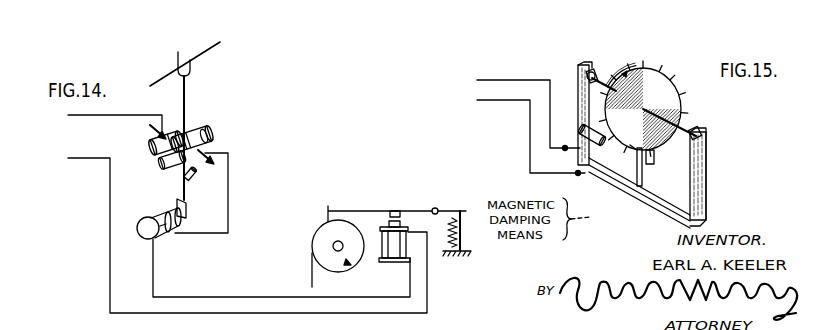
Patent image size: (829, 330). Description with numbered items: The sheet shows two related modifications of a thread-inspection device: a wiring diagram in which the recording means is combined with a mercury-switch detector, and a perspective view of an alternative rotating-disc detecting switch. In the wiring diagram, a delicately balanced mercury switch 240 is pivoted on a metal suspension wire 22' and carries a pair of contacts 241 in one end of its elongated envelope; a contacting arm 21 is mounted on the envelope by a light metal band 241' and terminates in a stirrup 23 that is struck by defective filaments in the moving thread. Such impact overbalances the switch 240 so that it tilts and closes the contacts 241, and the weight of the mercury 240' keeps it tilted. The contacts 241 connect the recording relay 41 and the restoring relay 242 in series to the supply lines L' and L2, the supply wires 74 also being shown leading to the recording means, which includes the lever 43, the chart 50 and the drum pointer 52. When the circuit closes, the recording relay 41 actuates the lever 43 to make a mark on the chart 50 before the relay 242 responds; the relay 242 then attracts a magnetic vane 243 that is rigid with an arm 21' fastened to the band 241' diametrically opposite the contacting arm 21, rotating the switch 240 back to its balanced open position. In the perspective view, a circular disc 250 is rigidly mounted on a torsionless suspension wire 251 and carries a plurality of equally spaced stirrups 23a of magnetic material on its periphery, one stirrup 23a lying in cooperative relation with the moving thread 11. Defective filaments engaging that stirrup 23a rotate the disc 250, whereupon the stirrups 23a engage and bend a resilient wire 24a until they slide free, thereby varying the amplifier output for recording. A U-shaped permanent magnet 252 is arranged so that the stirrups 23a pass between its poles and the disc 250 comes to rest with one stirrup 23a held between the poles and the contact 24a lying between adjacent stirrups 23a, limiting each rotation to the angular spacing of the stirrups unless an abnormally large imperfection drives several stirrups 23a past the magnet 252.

In FIG. 14, the moving thread 11 is at (218, 47).
In FIG. 15, the moving thread 11 is at (648, 62).
In FIG. 14, the contacting arm 21 is at (205, 136).
In FIG. 14, the arm 21' is at (167, 181).
In FIG. 14, the metal suspension wire 22' is at (223, 191).
In FIG. 14, the stirrup 23 is at (186, 54).
In FIG. 15, the stirrups 23a is at (624, 73).
In FIG. 15, the resilient wire 24a is at (603, 163).
In FIG. 14, the recording relay 41 is at (398, 250).
In FIG. 14, the lever 43 is at (365, 211).
In FIG. 14, the chart 50 is at (312, 254).
In FIG. 14, the drum pointer 52 is at (348, 263).
In FIG. 15, the supply wires 74 is at (492, 80).
In FIG. 14, the mercury switch 240 is at (213, 125).
In FIG. 14, the mercury 240' is at (232, 134).
In FIG. 14, the contacts 241 is at (142, 150).
In FIG. 14, the light metal band 241' is at (157, 114).
In FIG. 14, the relay 242 is at (165, 232).
In FIG. 14, the magnetic vane 243 is at (189, 208).
In FIG. 15, the circular disc 250 is at (666, 95).
In FIG. 15, the torsionless suspension wire 251 is at (590, 71).
In FIG. 15, the U-shaped permanent magnet 252 is at (637, 170).
In FIG. 14, the supply line L' is at (97, 124).
In FIG. 14, the supply line L2 is at (68, 159).